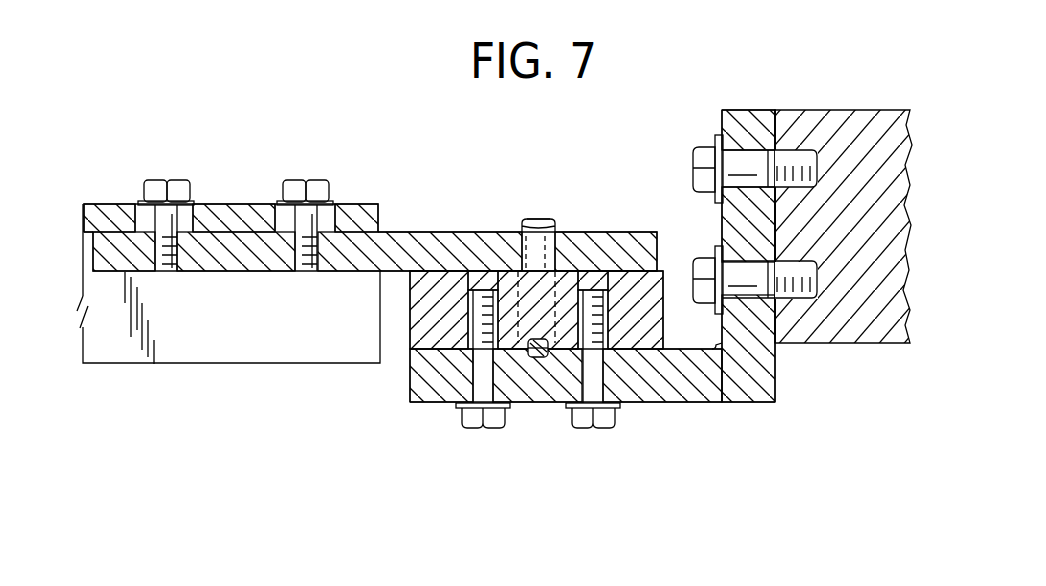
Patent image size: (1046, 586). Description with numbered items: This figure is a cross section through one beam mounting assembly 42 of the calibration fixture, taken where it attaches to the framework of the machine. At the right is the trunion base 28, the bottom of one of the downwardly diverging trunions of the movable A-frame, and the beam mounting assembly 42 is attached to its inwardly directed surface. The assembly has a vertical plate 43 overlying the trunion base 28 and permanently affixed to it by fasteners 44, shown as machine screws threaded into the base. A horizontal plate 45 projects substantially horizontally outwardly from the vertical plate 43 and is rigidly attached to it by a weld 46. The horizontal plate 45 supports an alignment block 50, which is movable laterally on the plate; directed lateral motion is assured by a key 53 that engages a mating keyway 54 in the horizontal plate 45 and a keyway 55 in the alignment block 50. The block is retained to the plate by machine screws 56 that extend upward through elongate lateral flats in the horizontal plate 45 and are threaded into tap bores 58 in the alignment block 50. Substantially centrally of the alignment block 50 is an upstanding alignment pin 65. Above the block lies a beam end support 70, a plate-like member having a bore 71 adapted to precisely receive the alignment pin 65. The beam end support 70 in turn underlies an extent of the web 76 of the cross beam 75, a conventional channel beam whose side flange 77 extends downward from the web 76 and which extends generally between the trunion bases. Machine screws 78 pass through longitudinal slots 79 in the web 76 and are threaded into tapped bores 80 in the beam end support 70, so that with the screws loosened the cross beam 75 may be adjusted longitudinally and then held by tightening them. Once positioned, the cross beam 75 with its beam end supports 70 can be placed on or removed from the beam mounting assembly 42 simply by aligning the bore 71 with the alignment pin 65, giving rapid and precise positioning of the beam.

The trunion base 28 is at (873, 123).
The beam mounting assembly 42 is at (690, 408).
The vertical plate 43 is at (745, 130).
The fasteners 44 is at (697, 150).
The horizontal plate 45 is at (660, 392).
The weld 46 is at (717, 343).
The alignment block 50 is at (431, 280).
The key 53 is at (538, 403).
The keyway 54 is at (548, 338).
The keyway 55 is at (531, 340).
The machine screws 56 is at (482, 428).
The tap bores 58 is at (478, 291).
The alignment pin 65 is at (535, 228).
The beam end support 70 is at (403, 248).
The bore 71 is at (521, 253).
The cross beam 75 is at (143, 364).
The web 76 is at (228, 215).
The side flange 77 is at (245, 350).
The machine screws 78 is at (175, 187).
The longitudinal slots 79 is at (140, 217).
The tapped bores 80 is at (165, 271).